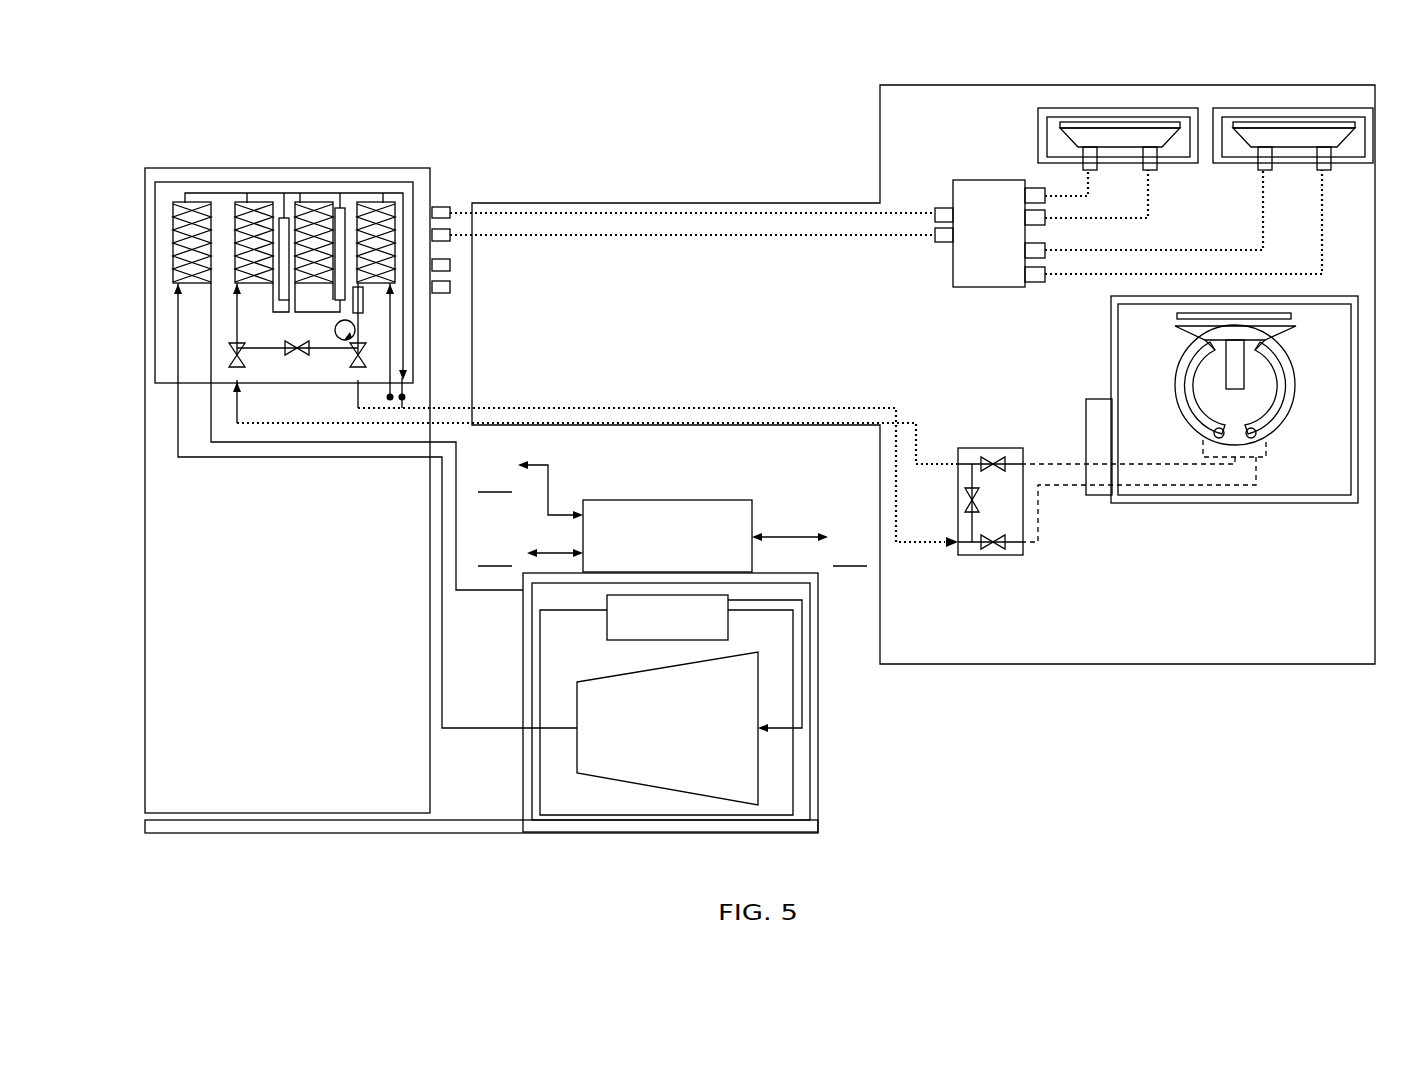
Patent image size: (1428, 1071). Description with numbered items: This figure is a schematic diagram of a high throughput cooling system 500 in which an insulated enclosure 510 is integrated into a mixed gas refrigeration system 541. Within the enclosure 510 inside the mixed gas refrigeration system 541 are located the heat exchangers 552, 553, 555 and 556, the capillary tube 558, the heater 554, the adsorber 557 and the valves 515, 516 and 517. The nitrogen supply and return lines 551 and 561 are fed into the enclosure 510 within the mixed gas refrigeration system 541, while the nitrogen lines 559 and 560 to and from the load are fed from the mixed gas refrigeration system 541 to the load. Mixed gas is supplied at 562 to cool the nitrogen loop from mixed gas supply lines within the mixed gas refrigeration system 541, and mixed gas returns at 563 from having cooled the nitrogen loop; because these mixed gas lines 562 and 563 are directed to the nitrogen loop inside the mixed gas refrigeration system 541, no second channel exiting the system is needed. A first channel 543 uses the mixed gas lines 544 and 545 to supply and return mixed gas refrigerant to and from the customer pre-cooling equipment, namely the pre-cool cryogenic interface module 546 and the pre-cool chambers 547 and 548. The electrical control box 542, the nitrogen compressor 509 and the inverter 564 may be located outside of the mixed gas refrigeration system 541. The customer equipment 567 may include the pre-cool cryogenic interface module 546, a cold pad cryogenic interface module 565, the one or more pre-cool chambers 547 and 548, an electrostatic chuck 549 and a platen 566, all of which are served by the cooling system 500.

The high throughput cooling system 500 is at (942, 742).
The nitrogen compressor 509 is at (758, 776).
The insulated enclosure 510 is at (155, 262).
The valve 515 is at (358, 380).
The valve 516 is at (228, 369).
The valve 517 is at (296, 355).
The mixed gas refrigeration system 541 is at (145, 660).
The electrical control box 542 is at (687, 500).
The first channel 543 is at (437, 207).
The mixed gas line 544 is at (592, 237).
The mixed gas line 545 is at (592, 211).
The pre-cool cryogenic interface module 546 is at (970, 247).
The pre-cool chamber 547 is at (1178, 108).
The pre-cool chamber 548 is at (1340, 108).
The electrostatic chuck 549 is at (1262, 327).
The nitrogen supply line 551 is at (443, 697).
The heat exchanger 552 is at (185, 200).
The heat exchanger 553 is at (247, 200).
The heater 554 is at (289, 300).
The heat exchanger 555 is at (312, 200).
The heat exchanger 556 is at (376, 200).
The adsorber 557 is at (363, 313).
The capillary tube 558 is at (355, 336).
The nitrogen line 559 is at (593, 406).
The nitrogen line 560 is at (593, 425).
The nitrogen return line 561 is at (498, 590).
The mixed gas supply 562 is at (390, 400).
The mixed gas return 563 is at (405, 397).
The inverter 564 is at (728, 630).
The cold pad cryogenic interface module 565 is at (1005, 555).
The platen 566 is at (1293, 400).
The customer equipment 567 is at (1310, 664).